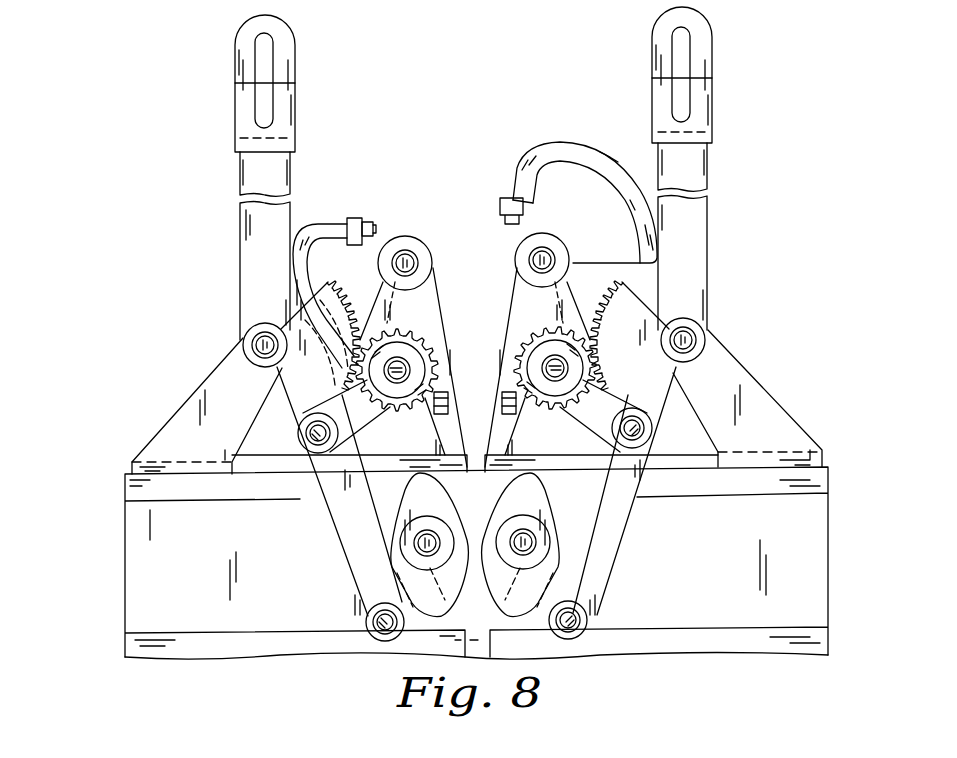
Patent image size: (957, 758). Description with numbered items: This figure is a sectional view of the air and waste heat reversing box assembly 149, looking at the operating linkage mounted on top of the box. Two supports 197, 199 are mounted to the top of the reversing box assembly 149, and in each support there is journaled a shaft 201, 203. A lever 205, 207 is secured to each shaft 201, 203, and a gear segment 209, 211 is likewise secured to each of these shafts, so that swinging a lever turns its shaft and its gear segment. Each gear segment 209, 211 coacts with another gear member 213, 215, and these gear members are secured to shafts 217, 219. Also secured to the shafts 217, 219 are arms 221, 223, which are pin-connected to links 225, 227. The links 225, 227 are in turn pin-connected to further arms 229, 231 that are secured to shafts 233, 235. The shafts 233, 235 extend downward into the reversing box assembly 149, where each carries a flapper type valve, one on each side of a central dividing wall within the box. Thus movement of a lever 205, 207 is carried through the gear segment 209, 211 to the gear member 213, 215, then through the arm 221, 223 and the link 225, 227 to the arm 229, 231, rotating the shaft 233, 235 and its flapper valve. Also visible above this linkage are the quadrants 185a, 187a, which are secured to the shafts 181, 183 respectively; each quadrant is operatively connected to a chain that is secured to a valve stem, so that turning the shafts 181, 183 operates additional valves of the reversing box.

The air and waste heat reversing box assembly 149 is at (122, 555).
The shaft 181 is at (402, 258).
The shaft 183 is at (543, 256).
The quadrant 185a is at (300, 238).
The quadrant 187a is at (581, 145).
The support 197 is at (172, 432).
The support 199 is at (745, 398).
The shaft 201 is at (262, 345).
The shaft 203 is at (700, 336).
The lever 205 is at (240, 210).
The lever 207 is at (710, 206).
The gear segment 209 is at (303, 428).
The gear segment 211 is at (645, 300).
The gear member 213 is at (408, 346).
The gear member 215 is at (520, 340).
The shaft 217 is at (397, 398).
The shaft 219 is at (553, 383).
The arm 221 is at (352, 388).
The arm 223 is at (600, 395).
The link 225 is at (345, 527).
The link 227 is at (608, 537).
The arm 229 is at (385, 600).
The arm 231 is at (520, 596).
The shaft 233 is at (428, 538).
The shaft 235 is at (524, 538).